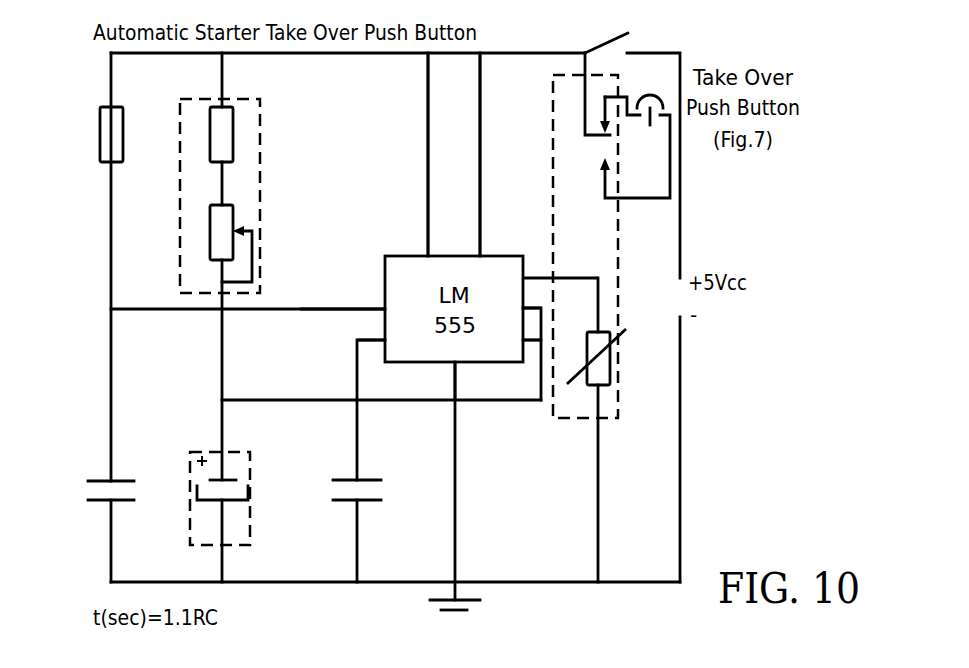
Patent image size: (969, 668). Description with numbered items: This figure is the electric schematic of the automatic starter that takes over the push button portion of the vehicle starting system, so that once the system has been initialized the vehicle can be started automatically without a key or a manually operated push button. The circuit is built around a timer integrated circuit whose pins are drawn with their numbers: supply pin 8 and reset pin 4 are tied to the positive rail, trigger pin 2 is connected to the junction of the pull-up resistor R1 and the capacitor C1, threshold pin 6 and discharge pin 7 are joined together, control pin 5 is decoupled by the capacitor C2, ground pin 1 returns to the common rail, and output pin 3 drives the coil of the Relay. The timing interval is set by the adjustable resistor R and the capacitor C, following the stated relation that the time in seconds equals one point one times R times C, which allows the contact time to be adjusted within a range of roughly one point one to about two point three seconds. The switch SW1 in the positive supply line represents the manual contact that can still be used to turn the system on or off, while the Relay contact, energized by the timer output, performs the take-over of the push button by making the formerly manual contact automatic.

The resistor R1 10K R1 is at (90, 133).
The variable timing resistor R is at (246, 266).
The timing capacitor C 47uF C is at (251, 517).
The capacitor C1 0.57uF C1 is at (82, 507).
The capacitor C2 0.01uF C2 is at (386, 504).
The LM555 pin 1 (ground) 1 is at (455, 368).
The LM555 pin 2 (trigger) 2 is at (351, 308).
The LM555 pin 3 (output) 3 is at (552, 278).
The LM555 pin 4 (reset) 4 is at (480, 169).
The LM555 pin 5 (control voltage) 5 is at (379, 339).
The LM555 pin 6 (threshold) 6 is at (523, 340).
The LM555 pin 7 (discharge) 7 is at (523, 308).
The LM555 pin 8 (Vcc) 8 is at (428, 169).
The relay Relay is at (611, 317).
The switch SW1 is at (618, 29).